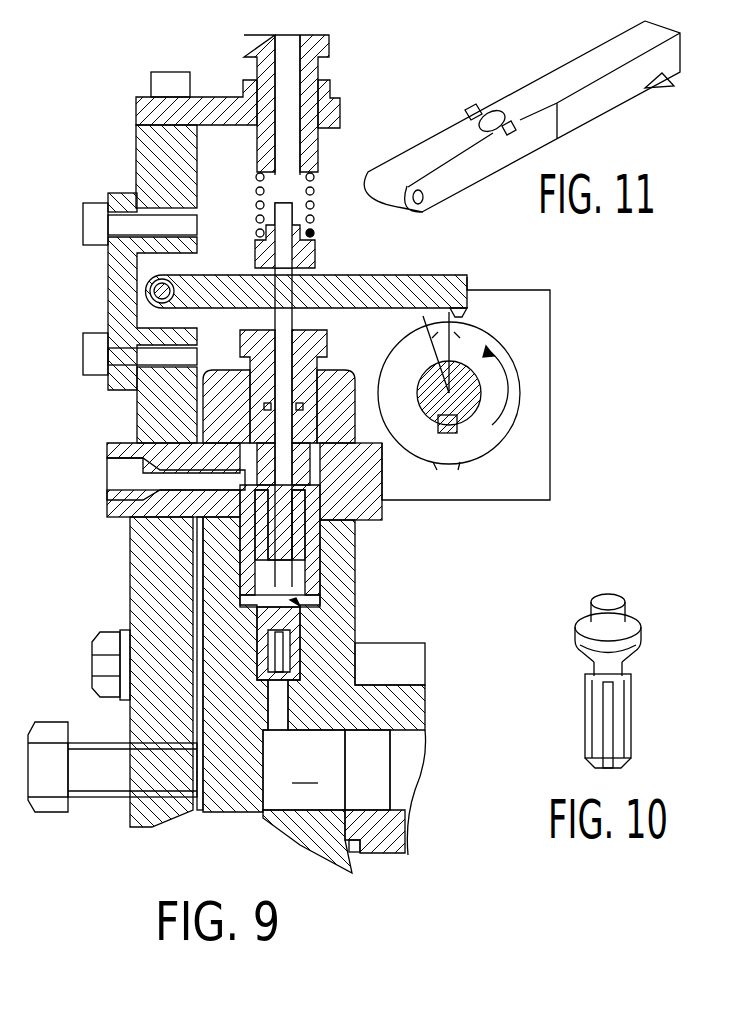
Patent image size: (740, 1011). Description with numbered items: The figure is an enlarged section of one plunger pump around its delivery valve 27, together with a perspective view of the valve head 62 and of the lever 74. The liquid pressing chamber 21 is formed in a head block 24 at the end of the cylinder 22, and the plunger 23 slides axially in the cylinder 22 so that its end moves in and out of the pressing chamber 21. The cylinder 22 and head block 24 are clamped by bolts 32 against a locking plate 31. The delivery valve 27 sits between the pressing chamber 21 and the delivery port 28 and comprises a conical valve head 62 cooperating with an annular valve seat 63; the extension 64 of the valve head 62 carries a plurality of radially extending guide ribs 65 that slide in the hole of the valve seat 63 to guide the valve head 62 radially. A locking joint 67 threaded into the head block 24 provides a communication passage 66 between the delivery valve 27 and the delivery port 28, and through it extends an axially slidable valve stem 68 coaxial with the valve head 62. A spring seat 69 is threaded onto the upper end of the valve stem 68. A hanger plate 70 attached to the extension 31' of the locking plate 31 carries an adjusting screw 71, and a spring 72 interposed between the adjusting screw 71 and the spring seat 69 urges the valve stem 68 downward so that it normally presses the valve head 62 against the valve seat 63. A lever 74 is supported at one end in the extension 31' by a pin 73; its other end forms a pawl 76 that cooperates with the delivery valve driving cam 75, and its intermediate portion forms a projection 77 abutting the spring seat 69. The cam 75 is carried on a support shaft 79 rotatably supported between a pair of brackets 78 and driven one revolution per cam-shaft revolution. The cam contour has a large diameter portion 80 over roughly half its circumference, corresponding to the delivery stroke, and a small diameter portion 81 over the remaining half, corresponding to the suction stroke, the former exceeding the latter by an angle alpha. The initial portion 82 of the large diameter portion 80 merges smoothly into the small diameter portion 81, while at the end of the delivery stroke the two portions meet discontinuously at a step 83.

In FIG. 9, the liquid pressing chamber 21 is at (304, 770).
In FIG. 9, the cylinder 22 is at (395, 856).
In FIG. 9, the plunger 23 is at (415, 755).
In FIG. 9, the head block 24 is at (358, 855).
In FIG. 9, the delivery valve 27 is at (302, 603).
In FIG. 9, the delivery port 28 is at (108, 486).
In FIG. 9, the locking plate 31 is at (236, 620).
In FIG. 9, the extension of the locking plate 31' is at (127, 164).
In FIG. 9, the bolts 32 is at (92, 656).
In FIG. 9, the valve head 62 is at (290, 590).
In FIG. 10, the valve head 62 is at (578, 630).
In FIG. 9, the valve seat 63 is at (300, 652).
In FIG. 10, the extension of the valve head 64 is at (600, 735).
In FIG. 10, the guide ribs 65 is at (585, 707).
In FIG. 9, the communication passage 66 is at (300, 568).
In FIG. 9, the locking joint 67 is at (340, 368).
In FIG. 9, the valve stem 68 is at (272, 321).
In FIG. 9, the spring seat 69 is at (316, 258).
In FIG. 9, the hanger plate 70 is at (215, 97).
In FIG. 9, the adjusting screw 71 is at (330, 50).
In FIG. 9, the spring 72 is at (256, 192).
In FIG. 9, the pin 73 is at (160, 278).
In FIG. 9, the lever 74 is at (382, 275).
In FIG. 11, the lever 74 is at (525, 92).
In FIG. 9, the delivery valve driving cam 75 is at (518, 380).
In FIG. 9, the pawl 76 is at (470, 306).
In FIG. 11, the pawl 76 is at (672, 88).
In FIG. 11, the projection 77 is at (465, 112).
In FIG. 9, the brackets 78 is at (552, 302).
In FIG. 9, the support shaft 79 is at (482, 355).
In FIG. 9, the large diameter portion 80 is at (520, 400).
In FIG. 9, the small diameter portion 81 is at (430, 466).
In FIG. 9, the initial portion 82 is at (452, 322).
In FIG. 9, the step 83 is at (457, 466).